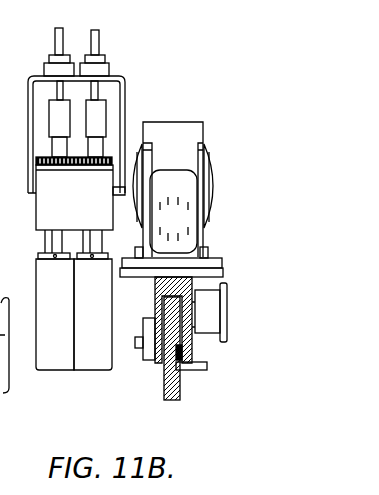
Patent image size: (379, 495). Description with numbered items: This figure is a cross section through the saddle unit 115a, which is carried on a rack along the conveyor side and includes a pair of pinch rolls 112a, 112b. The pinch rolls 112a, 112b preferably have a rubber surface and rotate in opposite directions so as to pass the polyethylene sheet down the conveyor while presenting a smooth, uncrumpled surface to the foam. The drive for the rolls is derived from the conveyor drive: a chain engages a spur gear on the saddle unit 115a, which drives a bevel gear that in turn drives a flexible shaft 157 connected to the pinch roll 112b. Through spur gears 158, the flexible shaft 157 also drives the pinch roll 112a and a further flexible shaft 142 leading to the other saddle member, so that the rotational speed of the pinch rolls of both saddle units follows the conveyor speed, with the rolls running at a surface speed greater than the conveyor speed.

The flexible shaft 142 is at (64, 42).
The flexible shaft 157 is at (96, 42).
The spur gears 158 is at (70, 163).
The saddle unit 115a is at (179, 121).
The pinch roll 112a is at (55, 362).
The pinch roll 112b is at (97, 366).